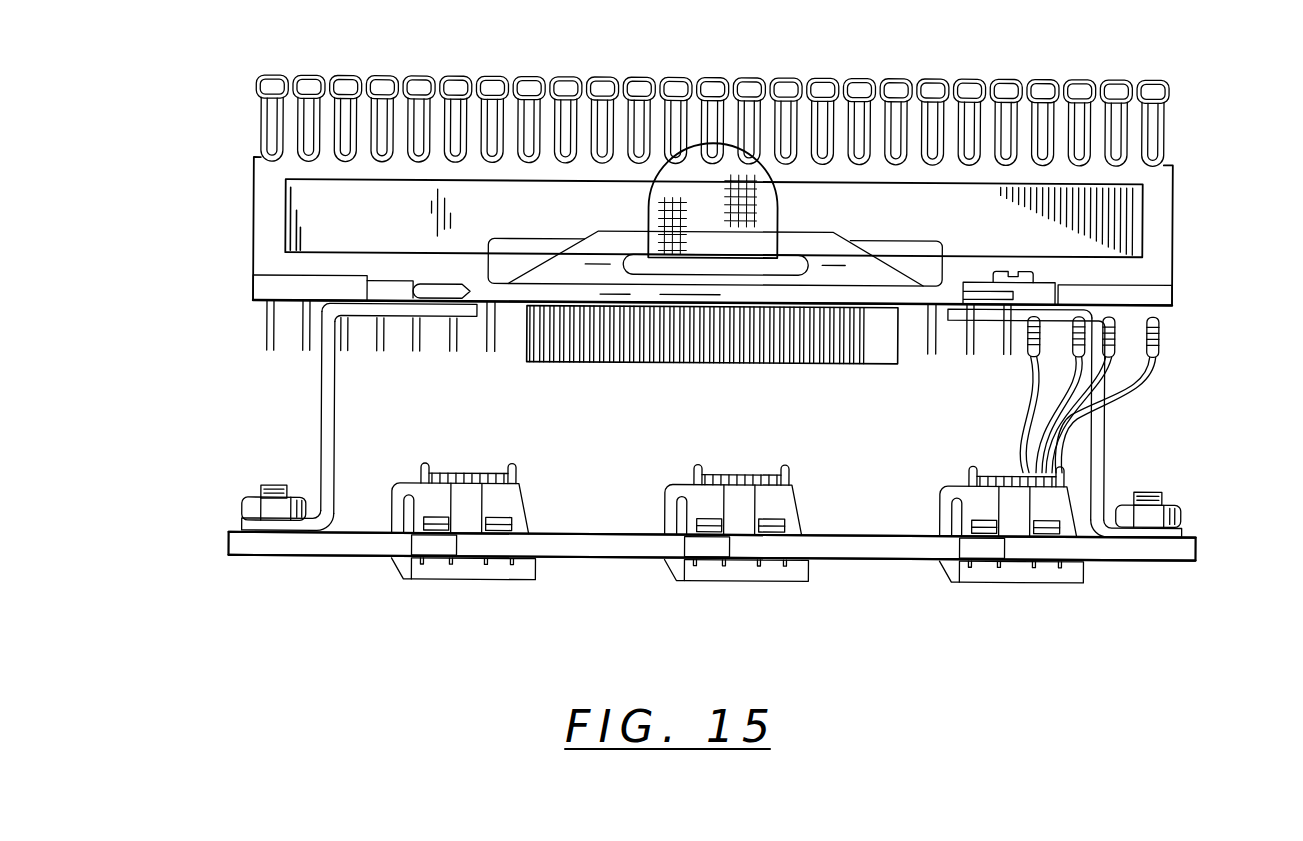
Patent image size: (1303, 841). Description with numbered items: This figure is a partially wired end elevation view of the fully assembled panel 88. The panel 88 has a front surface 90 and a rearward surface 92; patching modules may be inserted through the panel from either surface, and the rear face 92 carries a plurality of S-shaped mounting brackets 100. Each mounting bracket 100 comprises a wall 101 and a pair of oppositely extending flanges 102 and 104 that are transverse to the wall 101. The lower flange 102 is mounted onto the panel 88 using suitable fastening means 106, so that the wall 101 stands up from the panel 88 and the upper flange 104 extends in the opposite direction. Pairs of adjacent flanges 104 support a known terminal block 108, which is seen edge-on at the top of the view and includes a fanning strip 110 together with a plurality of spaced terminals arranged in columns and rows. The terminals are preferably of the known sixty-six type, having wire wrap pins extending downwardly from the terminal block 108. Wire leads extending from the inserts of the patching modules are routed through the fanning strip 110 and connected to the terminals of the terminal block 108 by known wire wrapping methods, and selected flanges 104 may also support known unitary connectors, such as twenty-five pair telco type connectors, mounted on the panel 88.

The panel 88 is at (748, 547).
The front surface 90 is at (1110, 558).
The rearward surface 92 is at (838, 532).
The S-shaped mounting bracket 100 is at (714, 456).
The wall 101 is at (322, 447).
The flange 102 is at (272, 530).
The flange 104 is at (380, 352).
The fastening means 106 is at (248, 505).
The terminal block 108 is at (242, 209).
The fanning strip 110 is at (1128, 75).